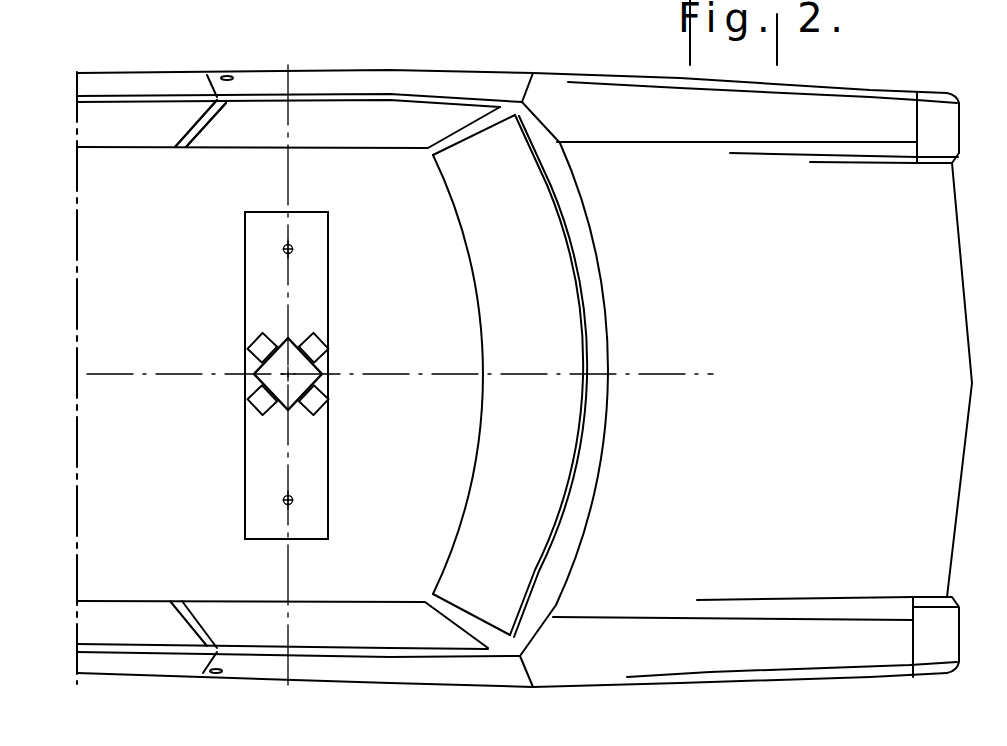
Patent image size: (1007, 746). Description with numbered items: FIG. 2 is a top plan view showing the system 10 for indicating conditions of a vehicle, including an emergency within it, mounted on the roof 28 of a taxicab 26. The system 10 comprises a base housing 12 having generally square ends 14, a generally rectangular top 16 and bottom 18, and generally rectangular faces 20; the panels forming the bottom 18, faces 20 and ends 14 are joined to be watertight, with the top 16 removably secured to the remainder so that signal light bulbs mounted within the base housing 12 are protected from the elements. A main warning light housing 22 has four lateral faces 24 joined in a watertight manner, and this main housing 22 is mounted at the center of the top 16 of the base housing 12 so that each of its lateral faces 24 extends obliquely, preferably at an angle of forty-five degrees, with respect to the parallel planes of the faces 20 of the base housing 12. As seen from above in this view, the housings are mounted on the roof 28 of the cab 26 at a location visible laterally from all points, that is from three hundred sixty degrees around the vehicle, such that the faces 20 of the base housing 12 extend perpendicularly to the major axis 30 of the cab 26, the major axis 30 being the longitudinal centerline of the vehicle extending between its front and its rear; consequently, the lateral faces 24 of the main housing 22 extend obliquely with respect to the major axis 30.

The system 10 is at (305, 281).
The base housing 12 is at (328, 227).
The ends 14 is at (307, 212).
The top 16 is at (318, 282).
The bottom 18 is at (255, 73).
The faces 20 is at (245, 478).
The main warning light housing 22 is at (325, 364).
The lateral faces 24 is at (297, 342).
The taxicab 26 is at (590, 104).
The roof 28 is at (412, 167).
The major axis 30 is at (532, 377).